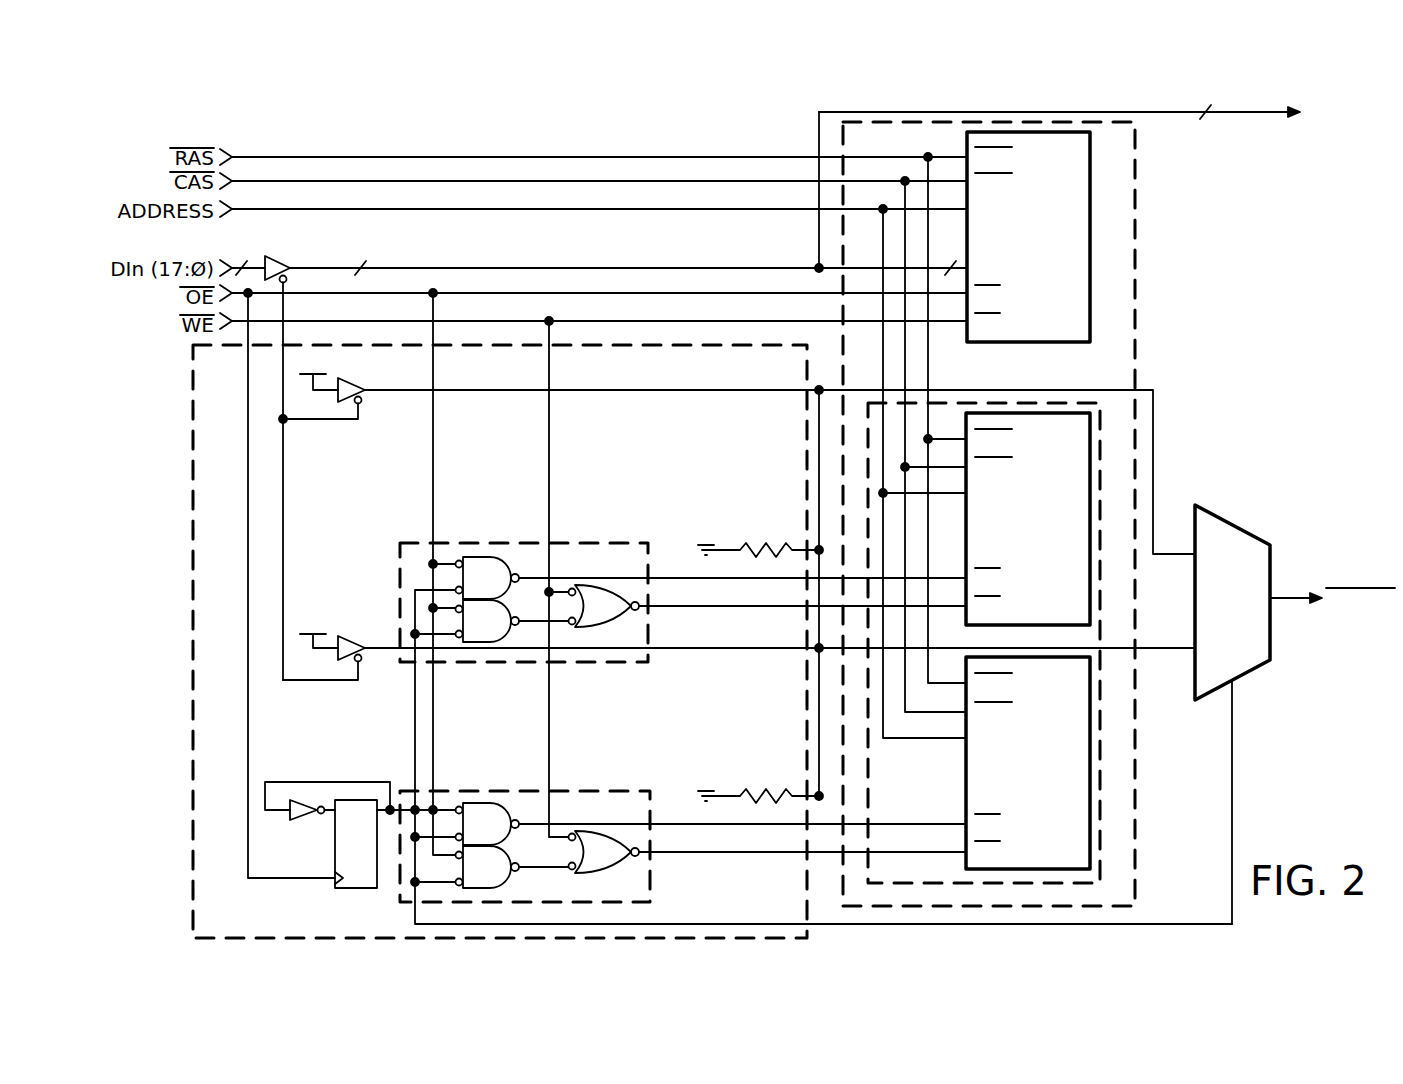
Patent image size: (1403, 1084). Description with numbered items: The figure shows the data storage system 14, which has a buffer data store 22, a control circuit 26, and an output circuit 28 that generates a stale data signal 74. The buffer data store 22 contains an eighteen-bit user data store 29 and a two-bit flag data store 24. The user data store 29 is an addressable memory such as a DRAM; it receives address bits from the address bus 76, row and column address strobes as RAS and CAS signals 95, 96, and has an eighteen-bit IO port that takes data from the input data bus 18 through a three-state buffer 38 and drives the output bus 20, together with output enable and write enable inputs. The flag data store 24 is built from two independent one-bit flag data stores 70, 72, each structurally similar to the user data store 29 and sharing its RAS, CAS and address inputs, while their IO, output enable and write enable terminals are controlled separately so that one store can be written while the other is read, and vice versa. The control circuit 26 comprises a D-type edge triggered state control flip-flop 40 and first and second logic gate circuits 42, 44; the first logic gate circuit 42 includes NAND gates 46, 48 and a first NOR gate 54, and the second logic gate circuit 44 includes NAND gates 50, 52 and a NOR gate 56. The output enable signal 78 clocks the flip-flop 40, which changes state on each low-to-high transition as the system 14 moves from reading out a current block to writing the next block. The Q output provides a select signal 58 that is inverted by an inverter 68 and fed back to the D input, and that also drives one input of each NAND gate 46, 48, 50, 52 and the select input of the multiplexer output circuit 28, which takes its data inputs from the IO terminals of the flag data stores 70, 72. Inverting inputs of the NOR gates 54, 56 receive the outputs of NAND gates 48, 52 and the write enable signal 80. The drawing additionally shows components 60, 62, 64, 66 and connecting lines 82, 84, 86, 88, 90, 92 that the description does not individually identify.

The data storage system 14 is at (673, 131).
The input data bus 18 is at (232, 262).
The output bus 20 is at (1232, 113).
The buffer data store 22 is at (1135, 265).
The flag data store 24 is at (1100, 632).
The control circuit 26 is at (193, 578).
The output circuit 28 is at (1215, 512).
The user data store 29 is at (1093, 192).
The three-state buffer 38 is at (290, 262).
The state control flip-flop 40 is at (348, 890).
The first logic gate circuit 42 is at (570, 543).
The second logic gate circuit 44 is at (570, 791).
The NAND gate 46 is at (482, 556).
The NAND gate 48 is at (498, 644).
The NAND gate 50 is at (482, 803).
The NAND gate 52 is at (506, 880).
The first NOR gate 54 is at (608, 627).
The NOR gate 56 is at (598, 872).
The select signal 58 is at (412, 745).
The pull-up buffer 60 is at (356, 387).
The pull-up buffer 62 is at (350, 640).
The pull-up resistor 64 is at (757, 547).
The pull-up resistor 66 is at (755, 790).
The inverter 68 is at (305, 822).
The first flag data store 70 is at (1093, 488).
The second flag data store 72 is at (1093, 783).
The stale data signal 74 is at (1285, 597).
The address bus 76 is at (238, 212).
The output enable signal 78 is at (395, 293).
The write enable signal 80 is at (450, 321).
The line to multiplexer input 1 82 is at (1010, 388).
The line to multiplexer input 2 84 is at (698, 652).
The OE line to flag memory 70 86 is at (668, 576).
The WE line to flag memory 70 88 is at (712, 610).
The OE line to flag memory 72 90 is at (668, 822).
The WE line to flag memory 72 92 is at (703, 858).
The RAS signal 95 is at (375, 157).
The CAS signal 96 is at (465, 181).